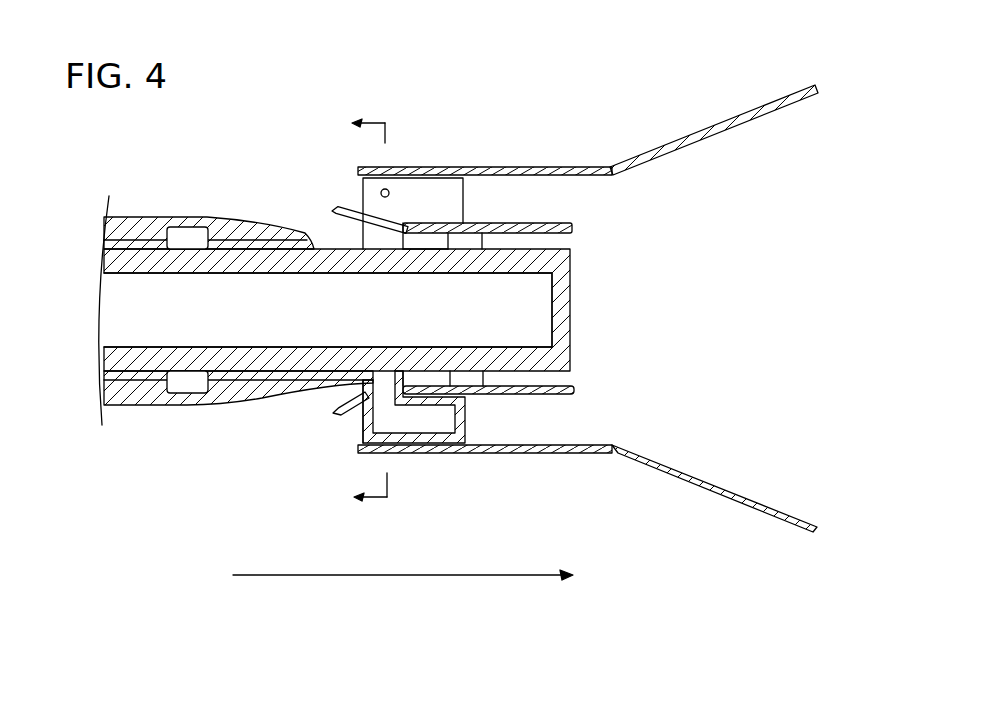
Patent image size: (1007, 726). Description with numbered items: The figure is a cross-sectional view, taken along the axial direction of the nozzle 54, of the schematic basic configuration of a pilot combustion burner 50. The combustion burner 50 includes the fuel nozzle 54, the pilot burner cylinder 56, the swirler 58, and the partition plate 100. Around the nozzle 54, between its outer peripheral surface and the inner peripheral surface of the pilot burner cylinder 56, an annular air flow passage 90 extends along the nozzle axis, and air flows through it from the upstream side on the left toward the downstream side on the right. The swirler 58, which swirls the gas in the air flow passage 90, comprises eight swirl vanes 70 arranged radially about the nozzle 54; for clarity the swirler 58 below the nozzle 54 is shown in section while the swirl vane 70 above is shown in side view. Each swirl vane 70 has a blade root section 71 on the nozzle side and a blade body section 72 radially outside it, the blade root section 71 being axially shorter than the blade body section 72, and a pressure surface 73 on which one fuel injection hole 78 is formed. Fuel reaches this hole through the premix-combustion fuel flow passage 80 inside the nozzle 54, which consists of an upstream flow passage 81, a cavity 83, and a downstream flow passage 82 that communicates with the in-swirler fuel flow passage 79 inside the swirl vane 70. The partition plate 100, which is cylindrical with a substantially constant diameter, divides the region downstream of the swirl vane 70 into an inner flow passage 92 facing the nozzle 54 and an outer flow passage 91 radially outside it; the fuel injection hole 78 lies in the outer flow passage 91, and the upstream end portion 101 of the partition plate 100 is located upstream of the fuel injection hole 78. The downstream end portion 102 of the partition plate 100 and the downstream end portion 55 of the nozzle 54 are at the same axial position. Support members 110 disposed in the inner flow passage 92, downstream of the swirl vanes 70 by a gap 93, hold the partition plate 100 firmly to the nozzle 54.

The combustion burner 50 is at (584, 98).
The nozzle 54 is at (571, 356).
The downstream end portion 55 is at (571, 316).
The pilot burner cylinder 56 is at (713, 122).
The swirler 58 is at (471, 118).
The swirl vane 70 is at (370, 203).
The blade root section 71 is at (336, 409).
The blade body section 72 is at (359, 428).
The pressure surface 73 is at (445, 192).
The fuel injection hole 78 is at (388, 189).
The in-swirler fuel flow passage 79 is at (422, 422).
The premix-combustion fuel flow passage 80 is at (267, 170).
The upstream flow passage 81 is at (121, 243).
The downstream flow passage 82 is at (247, 243).
The cavity 83 is at (182, 228).
The air flow passage 90 is at (640, 183).
The outer flow passage 91 is at (567, 203).
The inner flow passage 92 is at (567, 241).
The gap 93 is at (427, 249).
The partition plate 100 is at (519, 222).
The upstream end portion 101 is at (333, 210).
The downstream end portion 102 is at (576, 394).
The support member 110 is at (474, 244).